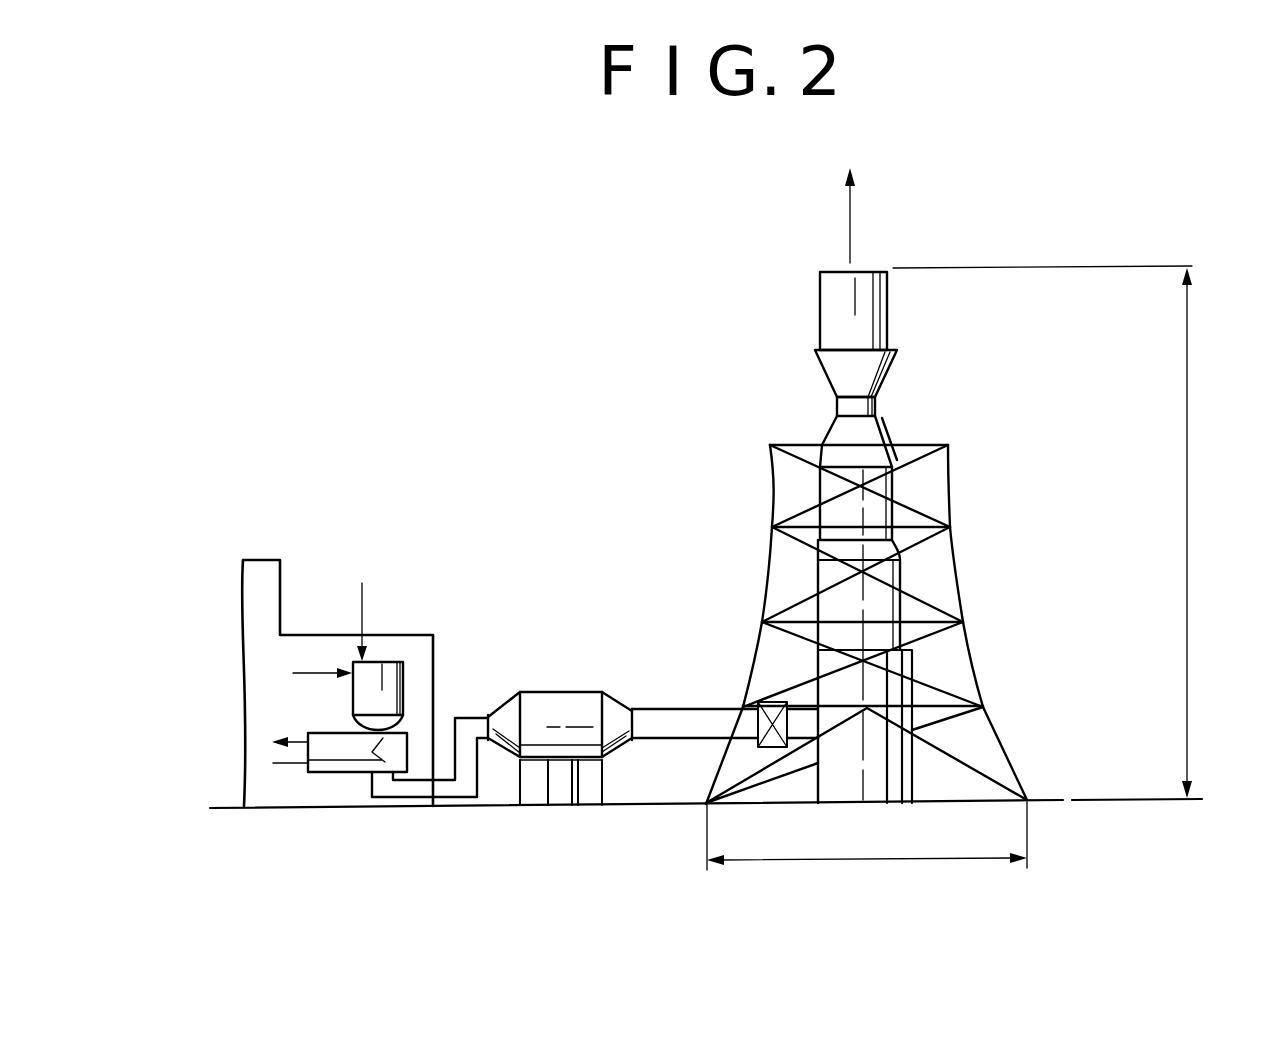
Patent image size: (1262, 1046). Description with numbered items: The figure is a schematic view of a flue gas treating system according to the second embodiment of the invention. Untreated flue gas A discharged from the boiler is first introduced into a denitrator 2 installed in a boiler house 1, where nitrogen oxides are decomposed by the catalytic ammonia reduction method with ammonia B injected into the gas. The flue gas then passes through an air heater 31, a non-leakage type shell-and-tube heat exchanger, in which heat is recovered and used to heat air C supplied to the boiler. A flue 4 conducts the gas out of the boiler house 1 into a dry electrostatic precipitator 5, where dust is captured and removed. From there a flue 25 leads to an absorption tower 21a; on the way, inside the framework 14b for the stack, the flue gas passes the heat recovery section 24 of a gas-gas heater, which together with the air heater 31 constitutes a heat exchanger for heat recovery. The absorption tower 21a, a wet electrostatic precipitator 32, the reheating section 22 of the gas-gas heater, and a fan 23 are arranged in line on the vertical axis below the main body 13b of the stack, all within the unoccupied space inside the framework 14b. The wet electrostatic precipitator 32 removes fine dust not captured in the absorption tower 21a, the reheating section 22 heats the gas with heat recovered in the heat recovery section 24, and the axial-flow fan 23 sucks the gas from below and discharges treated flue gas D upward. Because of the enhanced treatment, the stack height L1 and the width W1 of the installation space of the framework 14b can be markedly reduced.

The boiler house 1 is at (396, 634).
The denitrator 2 is at (405, 677).
The flue 4 is at (452, 798).
The dry electrostatic precipitator 5 is at (558, 691).
The main body of a stack 13b is at (820, 296).
The framework for the stack 14b is at (768, 447).
The absorption tower 21a is at (912, 692).
The reheating section of a gas-gas heater 22 is at (900, 493).
The fan 23 is at (888, 378).
The heat recovery section of the gas-gas heater 24 is at (757, 748).
The flue 25 is at (668, 708).
The air heater 31 is at (346, 775).
The wet electrostatic precipitator 32 is at (808, 574).
The untreated flue gas A is at (303, 674).
The ammonia B is at (362, 596).
The air C is at (285, 766).
The treated flue gas D is at (818, 209).
The stack height L1 is at (1068, 532).
The width of the installation space of framework for the stack W1 is at (867, 836).